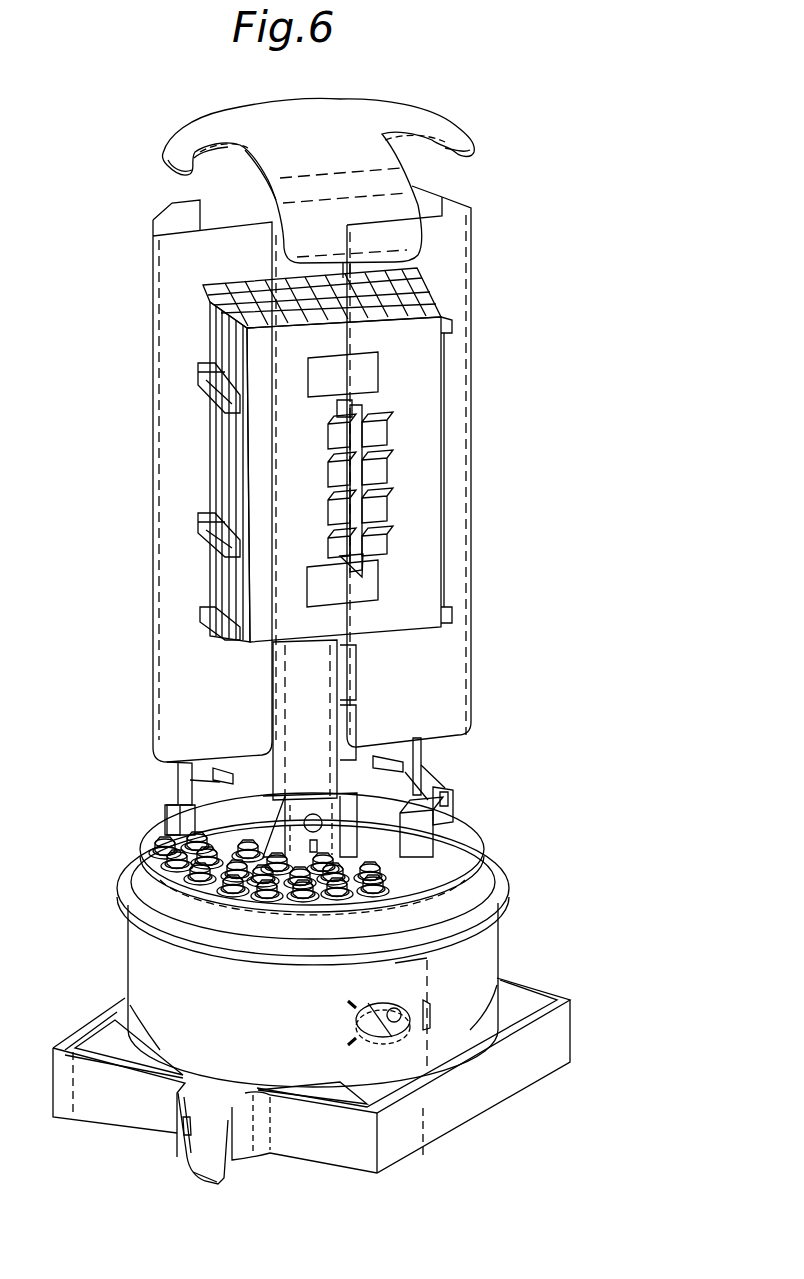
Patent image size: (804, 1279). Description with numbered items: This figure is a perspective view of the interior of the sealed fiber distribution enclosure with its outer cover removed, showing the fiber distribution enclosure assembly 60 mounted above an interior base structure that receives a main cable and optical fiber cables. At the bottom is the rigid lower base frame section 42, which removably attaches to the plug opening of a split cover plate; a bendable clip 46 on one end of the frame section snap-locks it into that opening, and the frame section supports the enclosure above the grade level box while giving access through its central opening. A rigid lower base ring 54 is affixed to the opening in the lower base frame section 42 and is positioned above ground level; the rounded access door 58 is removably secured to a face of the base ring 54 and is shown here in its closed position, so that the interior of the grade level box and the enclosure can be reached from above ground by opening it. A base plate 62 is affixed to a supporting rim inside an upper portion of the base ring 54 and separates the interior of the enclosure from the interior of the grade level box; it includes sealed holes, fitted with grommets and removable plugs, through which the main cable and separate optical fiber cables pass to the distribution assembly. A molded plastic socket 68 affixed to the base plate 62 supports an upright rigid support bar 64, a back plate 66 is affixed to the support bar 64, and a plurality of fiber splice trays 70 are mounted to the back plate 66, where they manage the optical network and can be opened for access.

The fiber distribution enclosure assembly 60 is at (498, 412).
The fiber splice trays 70 is at (415, 537).
The back plate 66 is at (437, 692).
The support bar 64 is at (300, 705).
The socket 68 is at (420, 778).
The base plate 62 is at (458, 838).
The lower base ring 54 is at (477, 952).
The access door 58 is at (180, 974).
The lower base frame section 42 is at (497, 1093).
The bendable clip 46 is at (203, 1137).